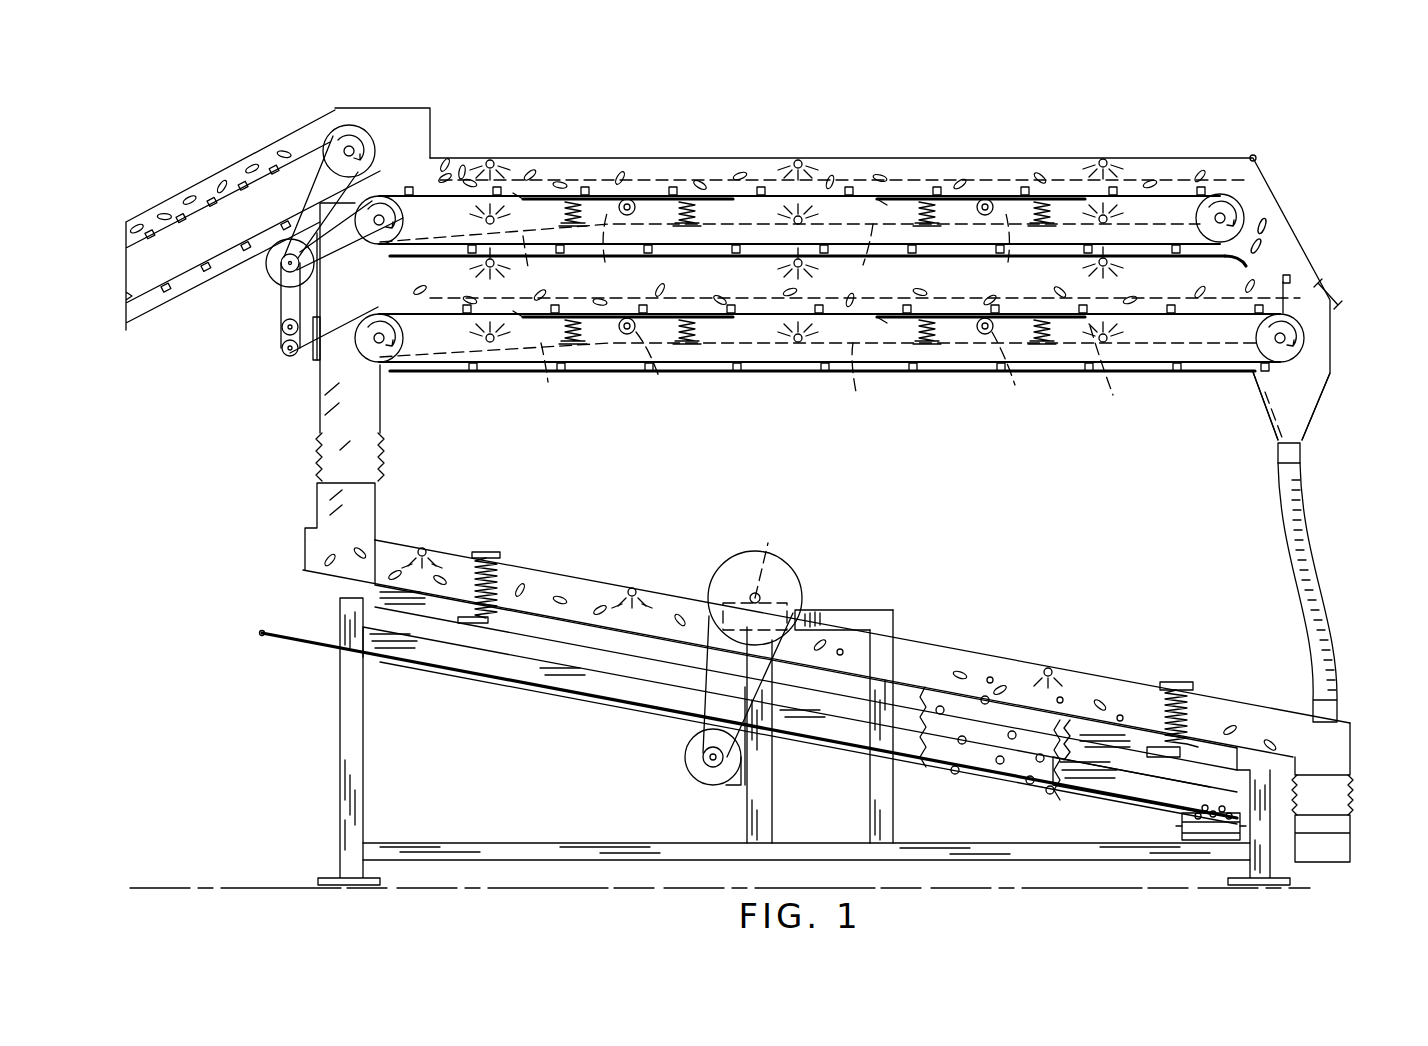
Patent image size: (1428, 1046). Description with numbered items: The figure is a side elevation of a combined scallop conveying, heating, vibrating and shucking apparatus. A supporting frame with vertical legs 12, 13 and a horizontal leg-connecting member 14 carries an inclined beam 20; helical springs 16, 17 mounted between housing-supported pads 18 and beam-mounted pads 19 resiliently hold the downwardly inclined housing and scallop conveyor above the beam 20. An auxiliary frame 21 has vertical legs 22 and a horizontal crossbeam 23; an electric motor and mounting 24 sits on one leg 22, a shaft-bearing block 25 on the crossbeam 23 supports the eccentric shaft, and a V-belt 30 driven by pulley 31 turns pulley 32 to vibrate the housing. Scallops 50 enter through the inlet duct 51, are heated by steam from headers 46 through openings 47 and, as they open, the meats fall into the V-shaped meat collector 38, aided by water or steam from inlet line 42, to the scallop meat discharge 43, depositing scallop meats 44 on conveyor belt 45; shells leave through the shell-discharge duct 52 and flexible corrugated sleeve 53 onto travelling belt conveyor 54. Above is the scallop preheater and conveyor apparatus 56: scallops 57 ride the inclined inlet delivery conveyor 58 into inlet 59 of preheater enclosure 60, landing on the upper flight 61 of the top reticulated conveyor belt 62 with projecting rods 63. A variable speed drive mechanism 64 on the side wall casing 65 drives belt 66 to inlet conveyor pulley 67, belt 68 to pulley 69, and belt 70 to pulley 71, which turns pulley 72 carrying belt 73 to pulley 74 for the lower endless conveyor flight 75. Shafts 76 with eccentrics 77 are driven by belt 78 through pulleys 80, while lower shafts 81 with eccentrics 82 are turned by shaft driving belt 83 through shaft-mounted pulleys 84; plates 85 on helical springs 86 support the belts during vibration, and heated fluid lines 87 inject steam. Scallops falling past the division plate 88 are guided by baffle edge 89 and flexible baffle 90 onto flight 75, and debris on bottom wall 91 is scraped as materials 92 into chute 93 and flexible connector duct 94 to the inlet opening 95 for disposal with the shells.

The vertical leg 12 is at (340, 730).
The vertical leg 13 is at (1268, 832).
The horizontal leg-connecting member 14 is at (533, 803).
The helical spring 16 is at (504, 563).
The helical spring 17 is at (1190, 698).
The housing-supported pad 18 is at (478, 551).
The beam-mounted pad 19 is at (467, 621).
The inclined beam 20 is at (585, 661).
The auxiliary frame 21 is at (908, 833).
The vertical legs 22 is at (873, 793).
The horizontal crossbeam 23 is at (833, 610).
The electric motor and mounting 24 is at (705, 786).
The shaft-bearing block 25 is at (756, 573).
The V-belt 30 is at (703, 706).
The pulley 31 is at (703, 763).
The pulley 32 is at (790, 576).
The meat collector 38 is at (1086, 775).
The inlet line 42 is at (266, 640).
The scallop meat discharge 43 is at (1178, 814).
The scallop meats 44 is at (1201, 822).
The conveyor belt 45 is at (1226, 832).
The headers 46 is at (421, 549).
The spaced openings 47 is at (426, 556).
The scallops 50 is at (318, 546).
The scallop-receiving inlet duct 51 is at (316, 506).
The shell-discharge duct 52 is at (1352, 746).
The flexible, corrugated sleeve 53 is at (1353, 797).
The travelling belt conveyor 54 is at (1352, 823).
The scallop preheater and conveyor apparatus 56 is at (1290, 182).
The scallops 57 is at (252, 160).
The inlet endless delivery conveyor 58 is at (198, 205).
The inlet 59 is at (377, 116).
The preheater enclosure 60 is at (424, 118).
The upper flight 61 is at (1182, 193).
The top endless reticulated conveyor belt 62 is at (518, 195).
The vertically-projecting rods 63 is at (584, 187).
The variable speed motor-driven mechanism 64 is at (265, 282).
The side wall casing 65 is at (320, 388).
The drive belt 66 is at (310, 193).
The inlet conveyor pulley 67 is at (338, 132).
The drive belt 68 is at (320, 259).
The pulley 69 is at (400, 221).
The drive belt 70 is at (280, 290).
The pulley 71 is at (282, 330).
The pulley 72 is at (282, 352).
The drive belt 73 is at (333, 328).
The pulley 74 is at (393, 348).
The endless conveyor flight 75 is at (741, 222).
The shafts 76 is at (630, 200).
The eccentric 77 is at (636, 204).
The belt 78 is at (827, 322).
The pulleys 80 is at (813, 247).
The shafts 81 is at (624, 334).
The eccentrics 82 is at (628, 334).
The shaft driving belt 83 is at (705, 380).
The shaft mounted pulleys 84 is at (660, 380).
The plate 85 is at (957, 204).
The helical springs 86 is at (922, 212).
The inlet heated fluid lines 87 is at (492, 160).
The division plate 88 is at (1168, 257).
The baffle edge 89 is at (1242, 258).
The flexible baffle 90 is at (1302, 263).
The bottom wall 91 is at (748, 372).
The materials 92 is at (1268, 412).
The downwardly extending chute 93 is at (1310, 420).
The flexible connector duct 94 is at (1304, 525).
The inlet opening 95 is at (1335, 718).